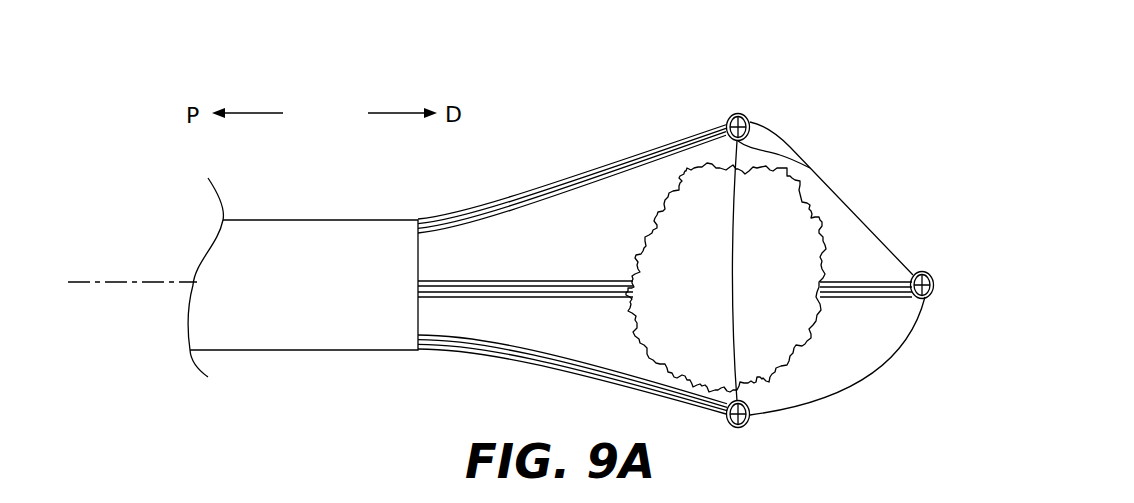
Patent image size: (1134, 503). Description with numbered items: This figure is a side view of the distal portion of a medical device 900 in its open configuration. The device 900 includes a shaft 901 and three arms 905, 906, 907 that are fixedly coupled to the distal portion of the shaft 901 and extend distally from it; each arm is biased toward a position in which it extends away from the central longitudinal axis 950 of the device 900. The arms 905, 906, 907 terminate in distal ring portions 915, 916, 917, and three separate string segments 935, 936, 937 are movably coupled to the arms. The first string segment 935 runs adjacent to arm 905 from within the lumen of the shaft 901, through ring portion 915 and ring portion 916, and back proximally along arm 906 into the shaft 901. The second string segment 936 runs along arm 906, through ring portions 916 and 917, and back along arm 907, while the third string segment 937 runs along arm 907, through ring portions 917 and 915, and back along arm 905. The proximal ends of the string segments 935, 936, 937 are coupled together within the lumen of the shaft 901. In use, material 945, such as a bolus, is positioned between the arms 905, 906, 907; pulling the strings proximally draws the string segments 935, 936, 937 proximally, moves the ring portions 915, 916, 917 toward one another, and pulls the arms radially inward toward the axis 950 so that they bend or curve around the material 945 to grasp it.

The medical device 900 is at (534, 167).
The shaft 901 is at (250, 224).
The first arm 905 is at (480, 352).
The second arm 906 is at (577, 184).
The third arm 907 is at (563, 282).
The ring portion 915 is at (738, 428).
The ring portion 916 is at (750, 116).
The ring portion 917 is at (937, 277).
The first string segment 935 is at (472, 208).
The second string segment 936 is at (543, 207).
The third string segment 937 is at (448, 280).
The material 945 is at (801, 243).
The central longitudinal axis 950 is at (107, 281).